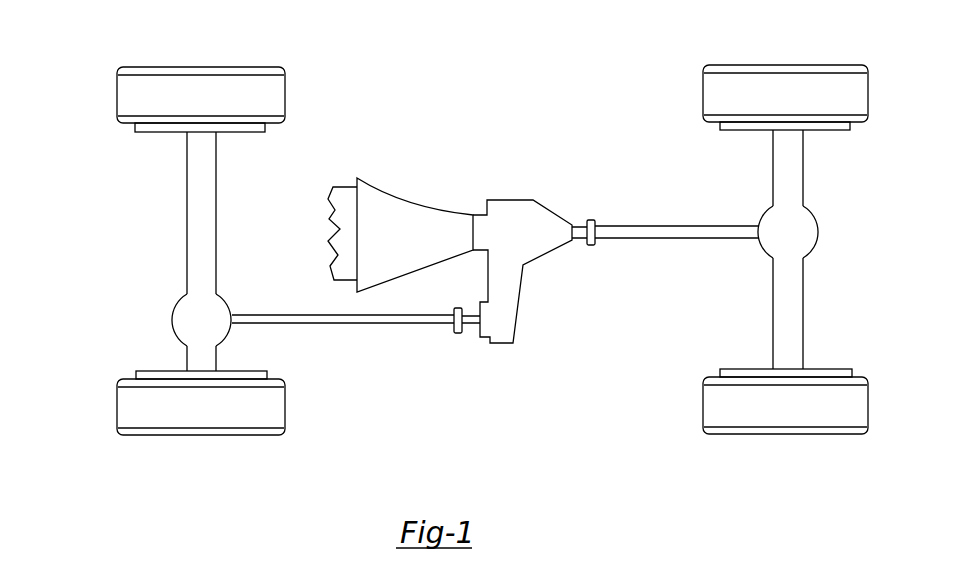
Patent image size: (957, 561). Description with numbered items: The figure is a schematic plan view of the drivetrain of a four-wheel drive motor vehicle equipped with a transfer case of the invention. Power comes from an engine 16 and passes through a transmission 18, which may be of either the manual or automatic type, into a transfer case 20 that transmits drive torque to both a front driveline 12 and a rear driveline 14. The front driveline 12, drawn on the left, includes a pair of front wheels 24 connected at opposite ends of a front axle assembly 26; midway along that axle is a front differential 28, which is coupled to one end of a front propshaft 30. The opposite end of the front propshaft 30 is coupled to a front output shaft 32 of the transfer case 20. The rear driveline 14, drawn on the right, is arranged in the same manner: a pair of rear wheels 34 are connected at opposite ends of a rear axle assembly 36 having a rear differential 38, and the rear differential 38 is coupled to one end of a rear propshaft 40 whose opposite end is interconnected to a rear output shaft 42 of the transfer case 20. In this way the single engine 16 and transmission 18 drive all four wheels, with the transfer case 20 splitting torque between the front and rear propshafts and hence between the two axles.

The front driveline 12 is at (234, 243).
The rear driveline 14 is at (713, 195).
The engine 16 is at (340, 217).
The transmission 18 is at (420, 246).
The transfer case 20 is at (554, 262).
The front wheels 24 is at (157, 93).
The front axle assembly 26 is at (190, 186).
The front differential 28 is at (188, 307).
The front propshaft 30 is at (425, 323).
The front output shaft 32 is at (470, 323).
The rear wheels 34 is at (750, 103).
The rear axle assembly 36 is at (792, 154).
The rear differential 38 is at (797, 227).
The rear propshaft 40 is at (716, 238).
The rear output shaft 42 is at (583, 220).